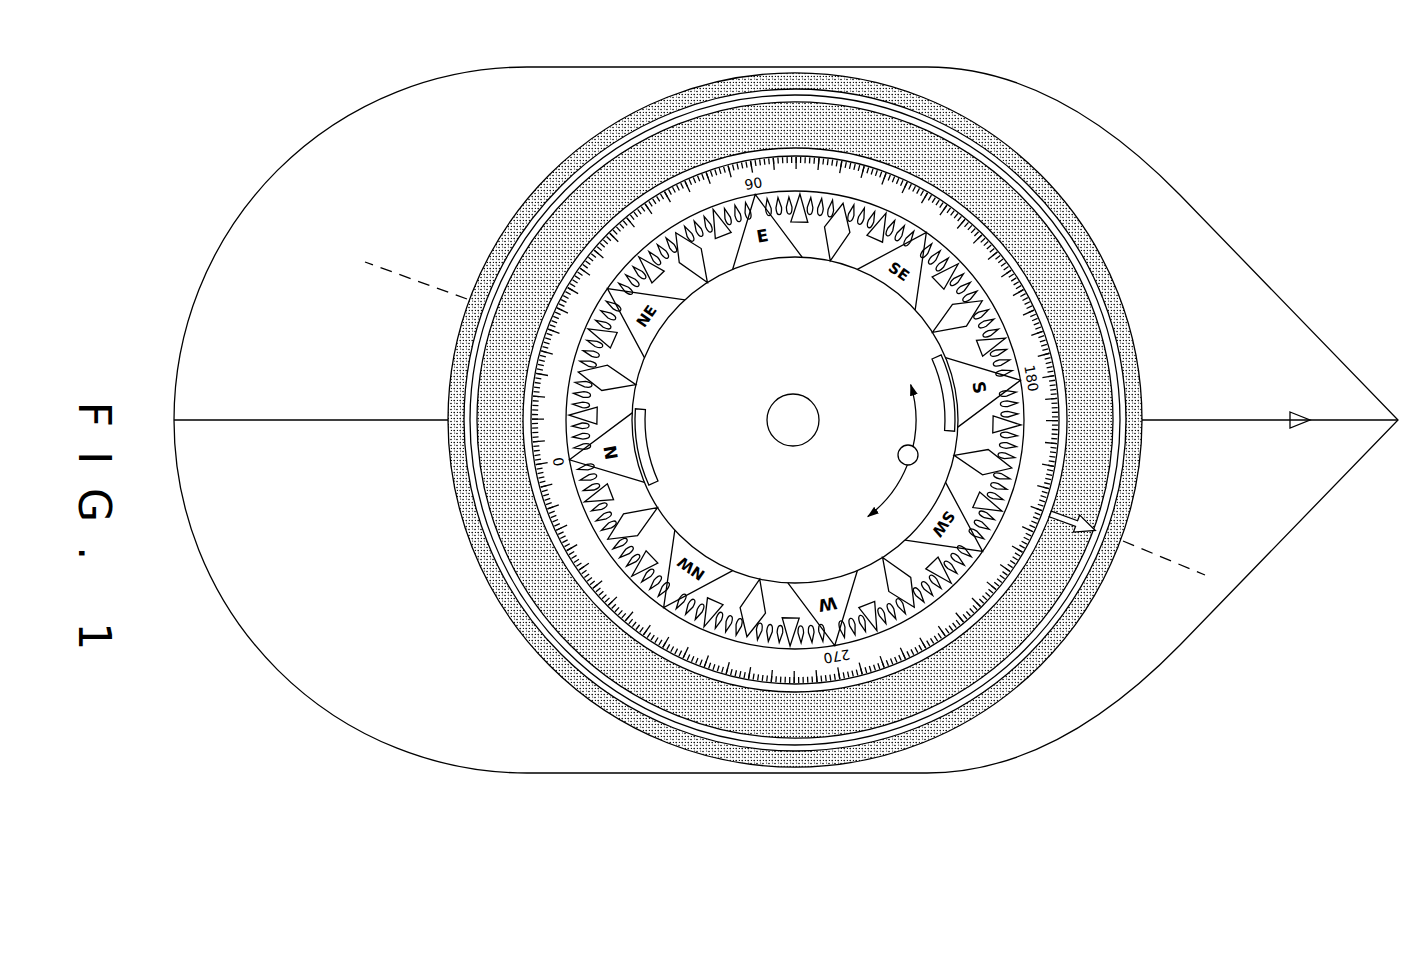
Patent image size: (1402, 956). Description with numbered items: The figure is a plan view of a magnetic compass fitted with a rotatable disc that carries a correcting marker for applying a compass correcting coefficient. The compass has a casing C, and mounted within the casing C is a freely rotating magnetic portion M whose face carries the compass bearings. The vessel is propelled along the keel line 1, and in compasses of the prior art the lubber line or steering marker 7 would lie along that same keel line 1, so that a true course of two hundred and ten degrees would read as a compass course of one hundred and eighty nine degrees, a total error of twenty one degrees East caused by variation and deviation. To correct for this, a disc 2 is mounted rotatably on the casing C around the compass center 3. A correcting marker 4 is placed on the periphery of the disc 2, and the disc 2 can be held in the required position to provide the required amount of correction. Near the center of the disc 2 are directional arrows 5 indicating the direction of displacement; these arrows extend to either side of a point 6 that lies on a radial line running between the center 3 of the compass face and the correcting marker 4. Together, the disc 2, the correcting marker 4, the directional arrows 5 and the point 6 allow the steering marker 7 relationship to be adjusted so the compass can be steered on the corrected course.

The keel line 1 is at (248, 416).
The disc 2 is at (500, 558).
The compass center 3 is at (790, 452).
The correcting marker 4 is at (1107, 529).
The directional arrows 5 is at (886, 477).
The point 6 is at (896, 450).
The lubber line or steering marker 7 is at (1126, 403).
The casing C is at (603, 719).
The magnetic portion M is at (758, 694).